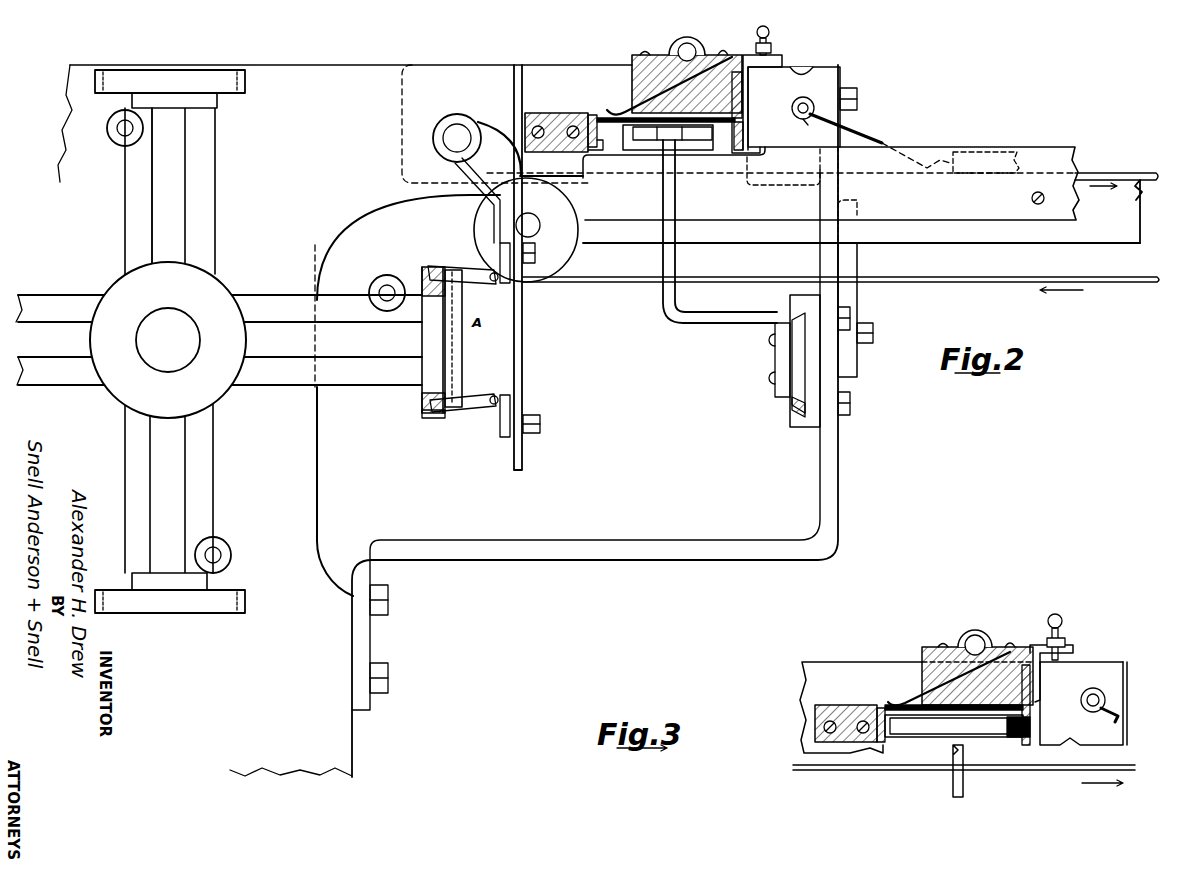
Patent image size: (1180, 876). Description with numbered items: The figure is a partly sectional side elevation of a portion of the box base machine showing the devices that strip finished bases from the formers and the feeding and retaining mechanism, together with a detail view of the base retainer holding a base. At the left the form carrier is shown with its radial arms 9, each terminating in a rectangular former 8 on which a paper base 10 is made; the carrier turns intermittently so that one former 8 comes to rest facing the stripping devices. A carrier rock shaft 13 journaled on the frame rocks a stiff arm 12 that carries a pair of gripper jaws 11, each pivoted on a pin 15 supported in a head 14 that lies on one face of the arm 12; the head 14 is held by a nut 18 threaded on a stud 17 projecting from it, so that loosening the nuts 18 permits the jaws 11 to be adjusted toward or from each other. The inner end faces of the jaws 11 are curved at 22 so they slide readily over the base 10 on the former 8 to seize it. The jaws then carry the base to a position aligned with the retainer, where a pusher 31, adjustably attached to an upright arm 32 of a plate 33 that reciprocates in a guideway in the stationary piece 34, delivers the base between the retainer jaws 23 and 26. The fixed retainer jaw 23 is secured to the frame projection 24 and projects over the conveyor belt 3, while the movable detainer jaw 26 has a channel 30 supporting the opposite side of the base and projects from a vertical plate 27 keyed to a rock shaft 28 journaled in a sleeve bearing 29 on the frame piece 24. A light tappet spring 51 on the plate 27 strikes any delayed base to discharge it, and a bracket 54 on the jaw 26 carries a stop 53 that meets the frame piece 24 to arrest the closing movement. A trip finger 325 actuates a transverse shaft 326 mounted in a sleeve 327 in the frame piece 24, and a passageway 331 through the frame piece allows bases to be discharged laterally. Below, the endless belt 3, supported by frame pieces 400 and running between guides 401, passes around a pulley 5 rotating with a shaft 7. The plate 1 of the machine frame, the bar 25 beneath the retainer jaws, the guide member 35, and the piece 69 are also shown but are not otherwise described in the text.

In FIG. 2, the supporting plate 1 is at (345, 420).
In FIG. 2, the conveyor belt 3 is at (1129, 174).
In FIG. 2, the pulley 5 is at (565, 247).
In FIG. 2, the shaft 7 is at (538, 228).
In FIG. 2, the former 8 is at (226, 83).
In FIG. 2, the radial arm 9 is at (168, 340).
In FIG. 2, the base 10 is at (468, 335).
In FIG. 3, the base 10 is at (925, 730).
In FIG. 2, the gripper jaw 11 is at (466, 268).
In FIG. 2, the arm 12 is at (522, 335).
In FIG. 2, the carrier rock shaft 13 is at (457, 130).
In FIG. 2, the head 14 is at (500, 248).
In FIG. 2, the pin 15 is at (494, 281).
In FIG. 2, the stud 17 is at (541, 425).
In FIG. 2, the nut 18 is at (532, 433).
In FIG. 2, the curved inner end face 22 is at (428, 266).
In FIG. 2, the retainer jaw 23 is at (597, 112).
In FIG. 3, the retainer jaw 23 is at (882, 745).
In FIG. 2, the frame projection 24 is at (781, 181).
In FIG. 3, the frame projection 24 is at (961, 707).
In FIG. 2, the blade 25 is at (608, 110).
In FIG. 3, the blade 25 is at (888, 704).
In FIG. 2, the detainer jaw 26 is at (748, 103).
In FIG. 3, the detainer jaw 26 is at (1033, 699).
In FIG. 2, the vertical plate 27 is at (658, 70).
In FIG. 3, the vertical plate 27 is at (925, 668).
In FIG. 2, the rock shaft 28 is at (690, 45).
In FIG. 3, the rock shaft 28 is at (975, 638).
In FIG. 2, the sleeve bearing 29 is at (641, 56).
In FIG. 3, the sleeve bearing 29 is at (943, 647).
In FIG. 2, the recess or channel 30 is at (730, 158).
In FIG. 3, the recess or channel 30 is at (1032, 727).
In FIG. 2, the pusher 31 is at (650, 152).
In FIG. 2, the arm 32 is at (697, 323).
In FIG. 2, the plate 33 is at (790, 358).
In FIG. 2, the stationary piece 34 is at (812, 424).
In FIG. 2, the frame 35 is at (842, 78).
In FIG. 2, the tappet member or spring 51 is at (676, 88).
In FIG. 3, the tappet member or spring 51 is at (977, 670).
In FIG. 2, the stop 53 is at (769, 36).
In FIG. 3, the stop 53 is at (1057, 615).
In FIG. 2, the bracket 54 is at (800, 70).
In FIG. 3, the bracket 54 is at (1075, 650).
In FIG. 2, the plate 69 is at (420, 416).
In FIG. 2, the trip finger 325 is at (868, 137).
In FIG. 3, the trip finger 325 is at (1111, 734).
In FIG. 2, the transverse shaft 326 is at (803, 119).
In FIG. 3, the transverse shaft 326 is at (1093, 712).
In FIG. 2, the sleeve 327 is at (803, 97).
In FIG. 3, the sleeve 327 is at (1093, 688).
In FIG. 2, the opening or passageway 331 is at (720, 158).
In FIG. 3, the opening or passageway 331 is at (999, 752).
In FIG. 2, the frame piece 400 is at (1123, 185).
In FIG. 2, the guide 401 is at (1040, 150).